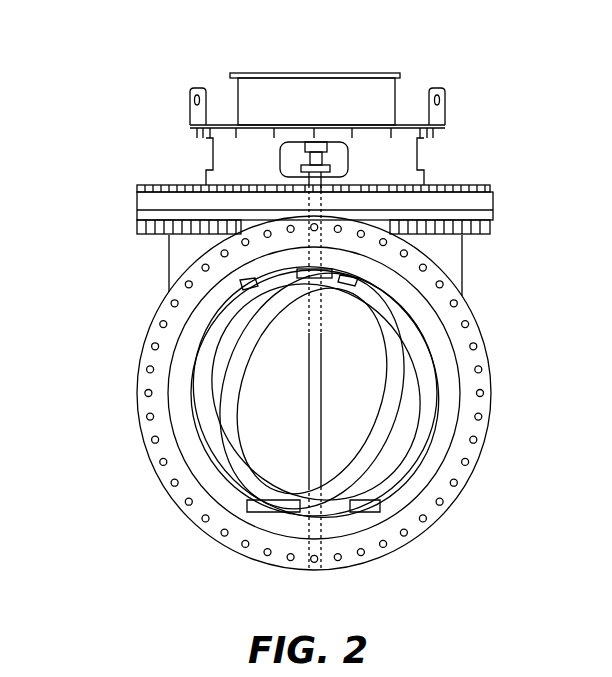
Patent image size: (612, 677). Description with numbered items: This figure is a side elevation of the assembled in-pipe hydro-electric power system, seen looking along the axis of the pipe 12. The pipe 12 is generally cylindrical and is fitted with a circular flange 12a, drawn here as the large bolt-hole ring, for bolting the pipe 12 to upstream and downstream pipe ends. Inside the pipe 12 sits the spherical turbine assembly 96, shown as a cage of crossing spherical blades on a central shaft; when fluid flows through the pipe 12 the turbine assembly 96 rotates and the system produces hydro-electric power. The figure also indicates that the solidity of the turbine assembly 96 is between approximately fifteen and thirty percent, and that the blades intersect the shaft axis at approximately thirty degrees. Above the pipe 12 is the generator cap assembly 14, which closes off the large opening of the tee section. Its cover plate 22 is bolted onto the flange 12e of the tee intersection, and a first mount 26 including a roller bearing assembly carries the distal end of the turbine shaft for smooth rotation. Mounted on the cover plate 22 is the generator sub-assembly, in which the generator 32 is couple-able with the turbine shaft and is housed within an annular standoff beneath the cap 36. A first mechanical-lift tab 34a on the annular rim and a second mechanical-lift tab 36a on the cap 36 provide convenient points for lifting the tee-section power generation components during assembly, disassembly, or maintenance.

The pipe 12 is at (505, 443).
The circular flange 12a is at (470, 323).
The flange 12e is at (495, 215).
The generator cap assembly 14 is at (75, 40).
The cover plate 22 is at (500, 208).
The first mount 26 is at (280, 166).
The generator 32 is at (280, 147).
The first mechanical-lift tab 34a is at (435, 88).
The cap 36 is at (313, 73).
The second mechanical-lift tab 36a is at (196, 88).
The spherical turbine assembly 96 is at (203, 453).